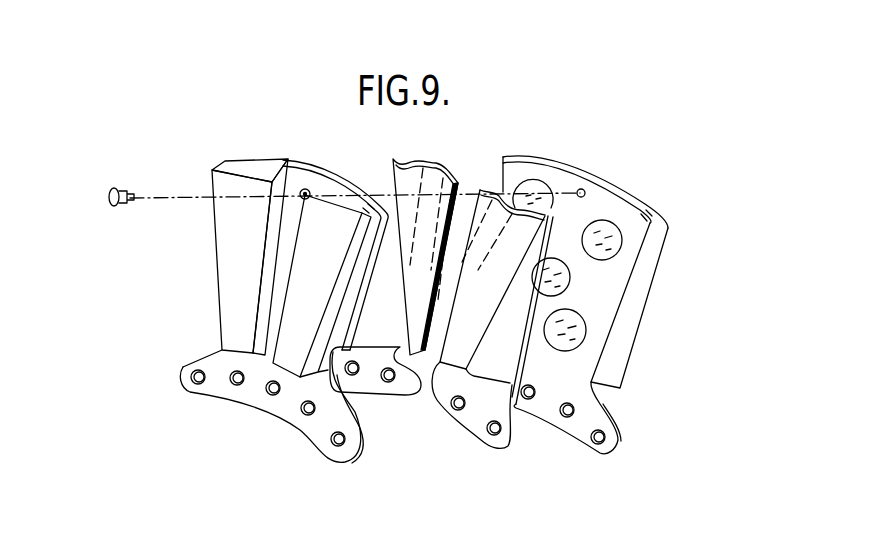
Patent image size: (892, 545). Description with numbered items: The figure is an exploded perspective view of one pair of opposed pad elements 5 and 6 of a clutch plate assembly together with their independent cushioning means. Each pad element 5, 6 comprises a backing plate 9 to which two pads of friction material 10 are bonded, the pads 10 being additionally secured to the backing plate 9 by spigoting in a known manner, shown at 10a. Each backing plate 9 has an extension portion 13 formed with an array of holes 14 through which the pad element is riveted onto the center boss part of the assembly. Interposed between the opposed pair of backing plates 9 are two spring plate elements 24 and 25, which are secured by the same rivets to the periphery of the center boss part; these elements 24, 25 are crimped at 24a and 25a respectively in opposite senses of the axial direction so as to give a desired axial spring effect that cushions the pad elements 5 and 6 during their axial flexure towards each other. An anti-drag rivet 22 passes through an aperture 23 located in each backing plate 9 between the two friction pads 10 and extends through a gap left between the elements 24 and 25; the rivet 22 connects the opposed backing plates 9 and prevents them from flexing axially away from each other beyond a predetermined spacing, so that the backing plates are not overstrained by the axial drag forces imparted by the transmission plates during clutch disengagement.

The pad element 5 is at (224, 155).
The pad element 6 is at (665, 251).
The backing plate 9 is at (336, 176).
The pad of friction material 10 is at (228, 268).
The spigoting 10a is at (610, 224).
The extension portion 13 is at (349, 413).
The holes 14 is at (333, 440).
The rivet 22 is at (121, 207).
The aperture 23 is at (303, 191).
The spring plate element 24 is at (408, 158).
The crimp 24a is at (433, 163).
The spring plate element 25 is at (490, 188).
The crimp 25a is at (524, 196).